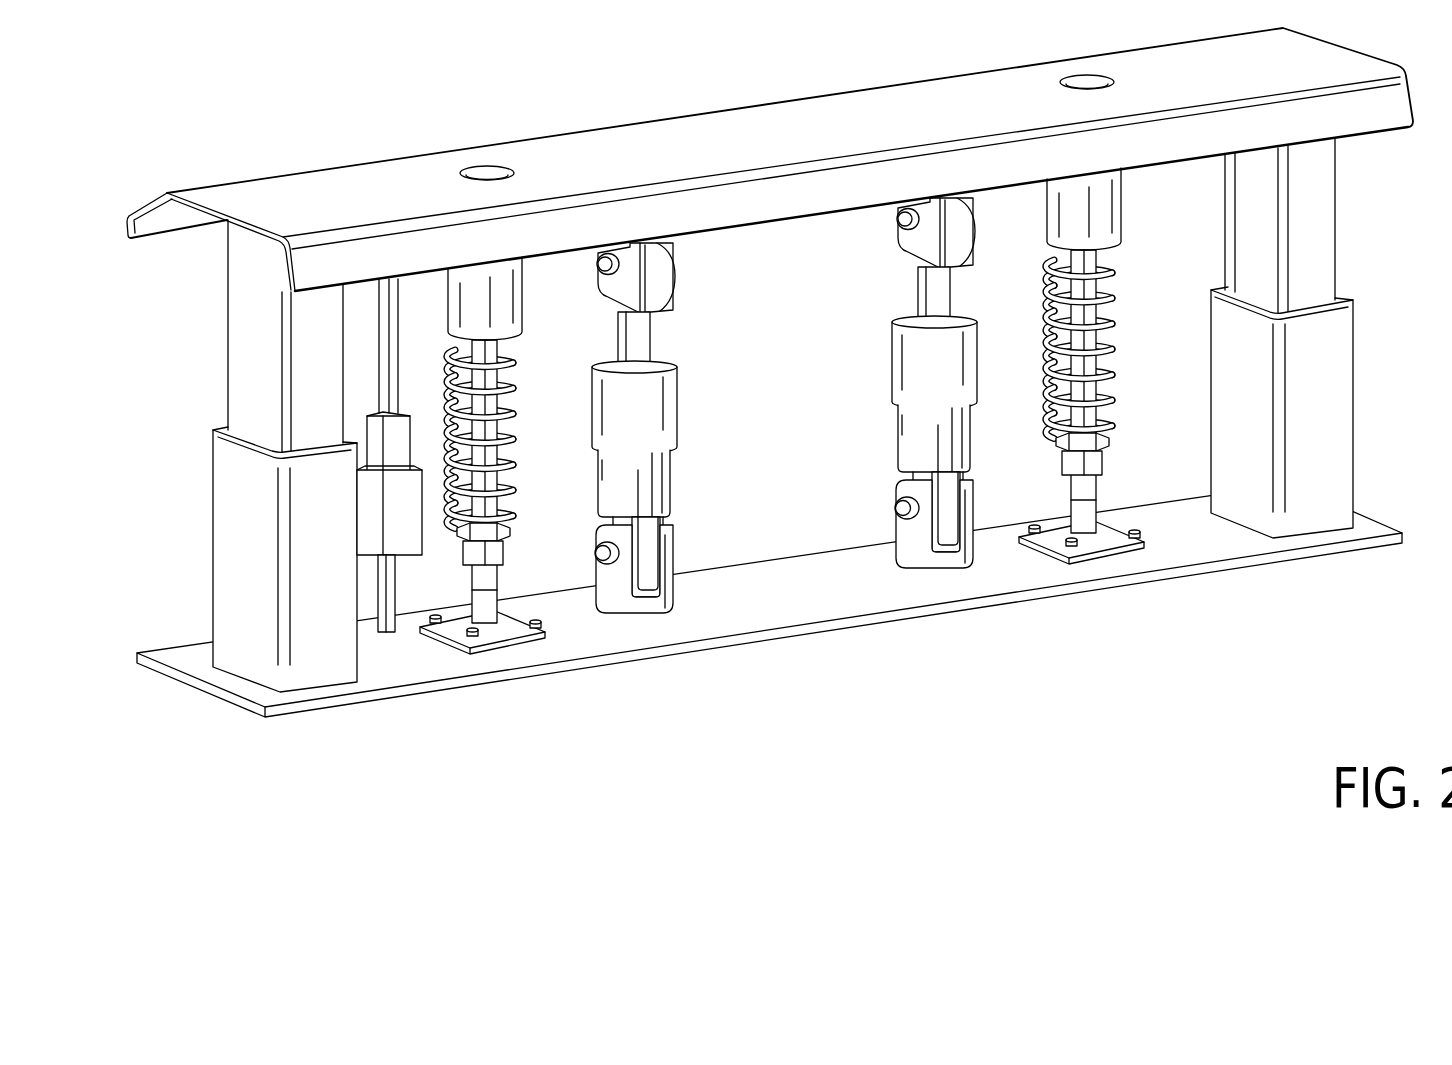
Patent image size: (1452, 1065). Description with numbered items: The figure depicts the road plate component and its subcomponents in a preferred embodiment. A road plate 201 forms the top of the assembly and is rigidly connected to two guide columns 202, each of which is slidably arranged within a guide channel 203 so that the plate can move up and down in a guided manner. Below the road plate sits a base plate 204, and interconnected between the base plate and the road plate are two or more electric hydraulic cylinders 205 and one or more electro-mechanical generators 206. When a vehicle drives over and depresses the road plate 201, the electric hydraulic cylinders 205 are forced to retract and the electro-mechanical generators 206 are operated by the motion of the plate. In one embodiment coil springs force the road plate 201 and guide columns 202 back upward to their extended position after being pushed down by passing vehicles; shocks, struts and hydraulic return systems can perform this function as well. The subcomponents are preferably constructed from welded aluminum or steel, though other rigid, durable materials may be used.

The road plate 201 is at (653, 120).
The guide column 202 is at (1220, 240).
The guide channel 203 is at (1299, 505).
The base plate 204 is at (807, 645).
The electric hydraulic cylinder 205 is at (664, 331).
The electro-mechanical generator 206 is at (418, 579).